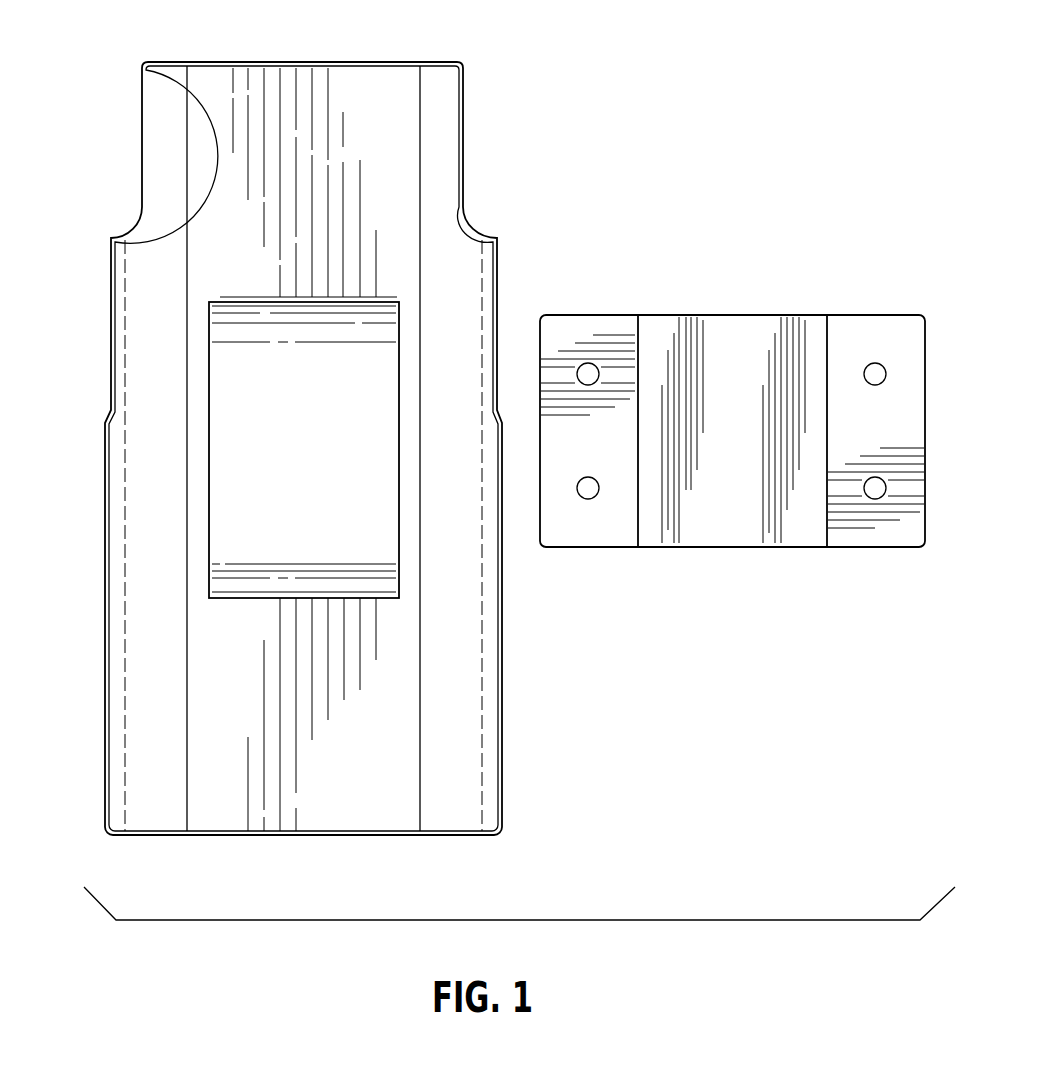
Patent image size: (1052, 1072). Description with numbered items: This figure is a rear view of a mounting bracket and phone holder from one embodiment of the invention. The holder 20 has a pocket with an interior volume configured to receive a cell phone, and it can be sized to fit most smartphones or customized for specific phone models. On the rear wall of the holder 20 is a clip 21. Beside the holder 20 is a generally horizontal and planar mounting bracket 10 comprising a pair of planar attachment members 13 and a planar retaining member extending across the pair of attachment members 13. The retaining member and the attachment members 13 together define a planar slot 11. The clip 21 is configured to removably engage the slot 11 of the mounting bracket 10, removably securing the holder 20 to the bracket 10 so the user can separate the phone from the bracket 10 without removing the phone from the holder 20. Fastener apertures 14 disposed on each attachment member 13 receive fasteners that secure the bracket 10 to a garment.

The mounting bracket 10 is at (590, 548).
The planar slot 11 is at (731, 334).
The planar attachment members 13 is at (585, 333).
The fastener apertures 14 is at (879, 363).
The holder 20 is at (122, 357).
The clip 21 is at (226, 476).